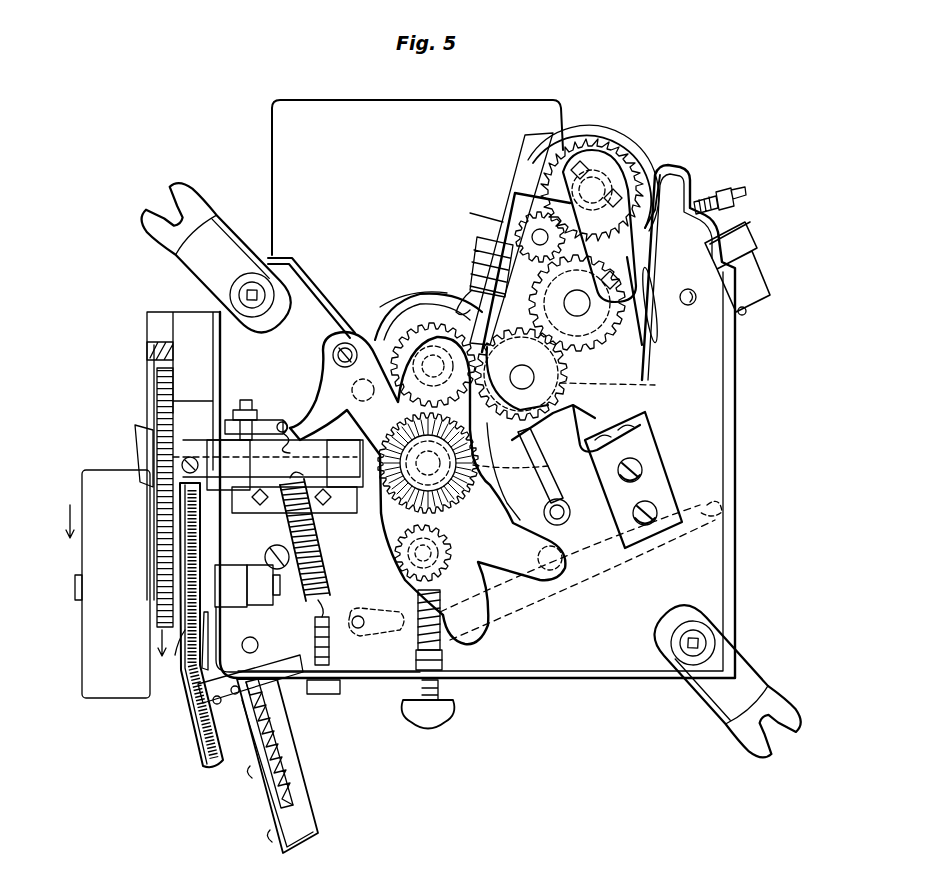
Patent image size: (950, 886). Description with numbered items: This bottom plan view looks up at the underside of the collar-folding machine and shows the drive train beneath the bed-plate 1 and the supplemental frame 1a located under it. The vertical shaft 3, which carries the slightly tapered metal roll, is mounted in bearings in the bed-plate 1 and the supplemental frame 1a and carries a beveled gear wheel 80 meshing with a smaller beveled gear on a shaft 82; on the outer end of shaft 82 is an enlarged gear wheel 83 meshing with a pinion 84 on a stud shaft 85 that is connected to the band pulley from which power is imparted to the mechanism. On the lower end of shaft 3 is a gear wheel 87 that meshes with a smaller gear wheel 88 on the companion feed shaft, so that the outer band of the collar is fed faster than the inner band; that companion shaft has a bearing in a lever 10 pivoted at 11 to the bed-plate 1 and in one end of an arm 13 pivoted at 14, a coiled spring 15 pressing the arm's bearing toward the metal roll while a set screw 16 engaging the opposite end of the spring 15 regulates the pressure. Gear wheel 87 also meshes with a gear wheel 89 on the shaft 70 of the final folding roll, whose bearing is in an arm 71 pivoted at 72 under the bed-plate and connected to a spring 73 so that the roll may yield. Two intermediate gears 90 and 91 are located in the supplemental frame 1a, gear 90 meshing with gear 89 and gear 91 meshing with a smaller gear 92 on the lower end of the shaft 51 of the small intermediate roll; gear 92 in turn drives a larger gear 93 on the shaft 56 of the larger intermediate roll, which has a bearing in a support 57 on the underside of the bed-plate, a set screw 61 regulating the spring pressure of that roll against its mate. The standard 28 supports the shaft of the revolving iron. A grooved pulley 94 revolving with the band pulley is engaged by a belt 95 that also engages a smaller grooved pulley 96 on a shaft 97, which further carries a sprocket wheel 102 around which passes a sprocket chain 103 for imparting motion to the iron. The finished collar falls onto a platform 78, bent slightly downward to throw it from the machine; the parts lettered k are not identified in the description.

The platform 78 is at (397, 101).
The bed-plate 1 is at (736, 365).
The wrench k is at (213, 220).
The enlarged gear wheel 83 is at (167, 403).
The pinion 84 is at (163, 585).
The smaller grooved pulley 96 is at (104, 699).
The stud shaft 85 is at (80, 597).
The belt 95 is at (205, 690).
The grooved pulley 94 is at (175, 657).
The sprocket wheel 102 is at (302, 810).
The sprocket chain 103 is at (300, 757).
The shaft 97 is at (292, 688).
The shaft 82 is at (296, 450).
The vertical shaft 3 is at (392, 530).
The supplemental frame 1a is at (533, 550).
The pivot 72 is at (338, 352).
The arm 71 is at (365, 335).
The gear wheel 89 is at (388, 322).
The intermediate gear 91 is at (393, 498).
The arm 13 is at (400, 556).
The pivot 14 is at (277, 550).
The spring 73 is at (316, 592).
The smaller gear wheel 88 is at (370, 576).
The pivot 11 is at (376, 614).
The coiled spring 15 is at (426, 618).
The set screw 16 is at (440, 698).
The intermediate gear 90 is at (579, 337).
The smaller gear 92 is at (515, 240).
The shaft 51 is at (520, 223).
The shaft 70 is at (427, 251).
The larger gear 93 is at (597, 180).
The support 57 is at (560, 160).
The shaft 56 is at (662, 168).
The set screw 61 is at (736, 186).
The standard 28 is at (764, 292).
The lever 10 is at (722, 514).
The beveled gear wheel 80 is at (540, 480).
The gear wheel 87 is at (508, 480).